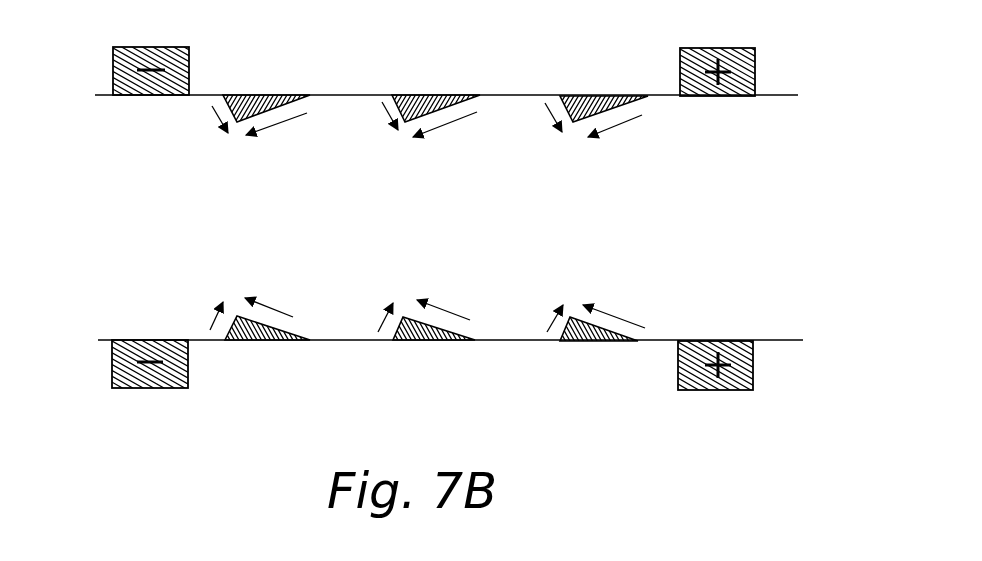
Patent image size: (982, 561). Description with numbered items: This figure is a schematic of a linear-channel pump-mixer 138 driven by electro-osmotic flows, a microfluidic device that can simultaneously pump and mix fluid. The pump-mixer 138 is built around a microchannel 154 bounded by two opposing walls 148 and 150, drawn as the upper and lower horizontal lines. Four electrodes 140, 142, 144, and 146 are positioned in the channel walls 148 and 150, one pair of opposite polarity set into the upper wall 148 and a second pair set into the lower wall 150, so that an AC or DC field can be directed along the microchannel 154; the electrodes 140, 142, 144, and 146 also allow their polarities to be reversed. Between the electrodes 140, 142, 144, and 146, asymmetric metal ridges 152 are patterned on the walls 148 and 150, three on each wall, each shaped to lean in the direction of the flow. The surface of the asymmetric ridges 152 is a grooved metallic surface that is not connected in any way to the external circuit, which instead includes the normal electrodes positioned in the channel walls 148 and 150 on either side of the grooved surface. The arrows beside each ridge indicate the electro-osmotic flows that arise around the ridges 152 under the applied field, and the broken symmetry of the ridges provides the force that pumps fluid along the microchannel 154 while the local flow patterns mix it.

The linear-channel pump-mixer 138 is at (423, 373).
The electrode 140 is at (153, 47).
The electrode 142 is at (757, 62).
The electrode 144 is at (158, 390).
The electrode 146 is at (718, 392).
The microchannel wall 148 is at (407, 95).
The microchannel wall 150 is at (520, 346).
The asymmetric metal ridges 152 is at (388, 108).
The microchannel 154 is at (108, 156).